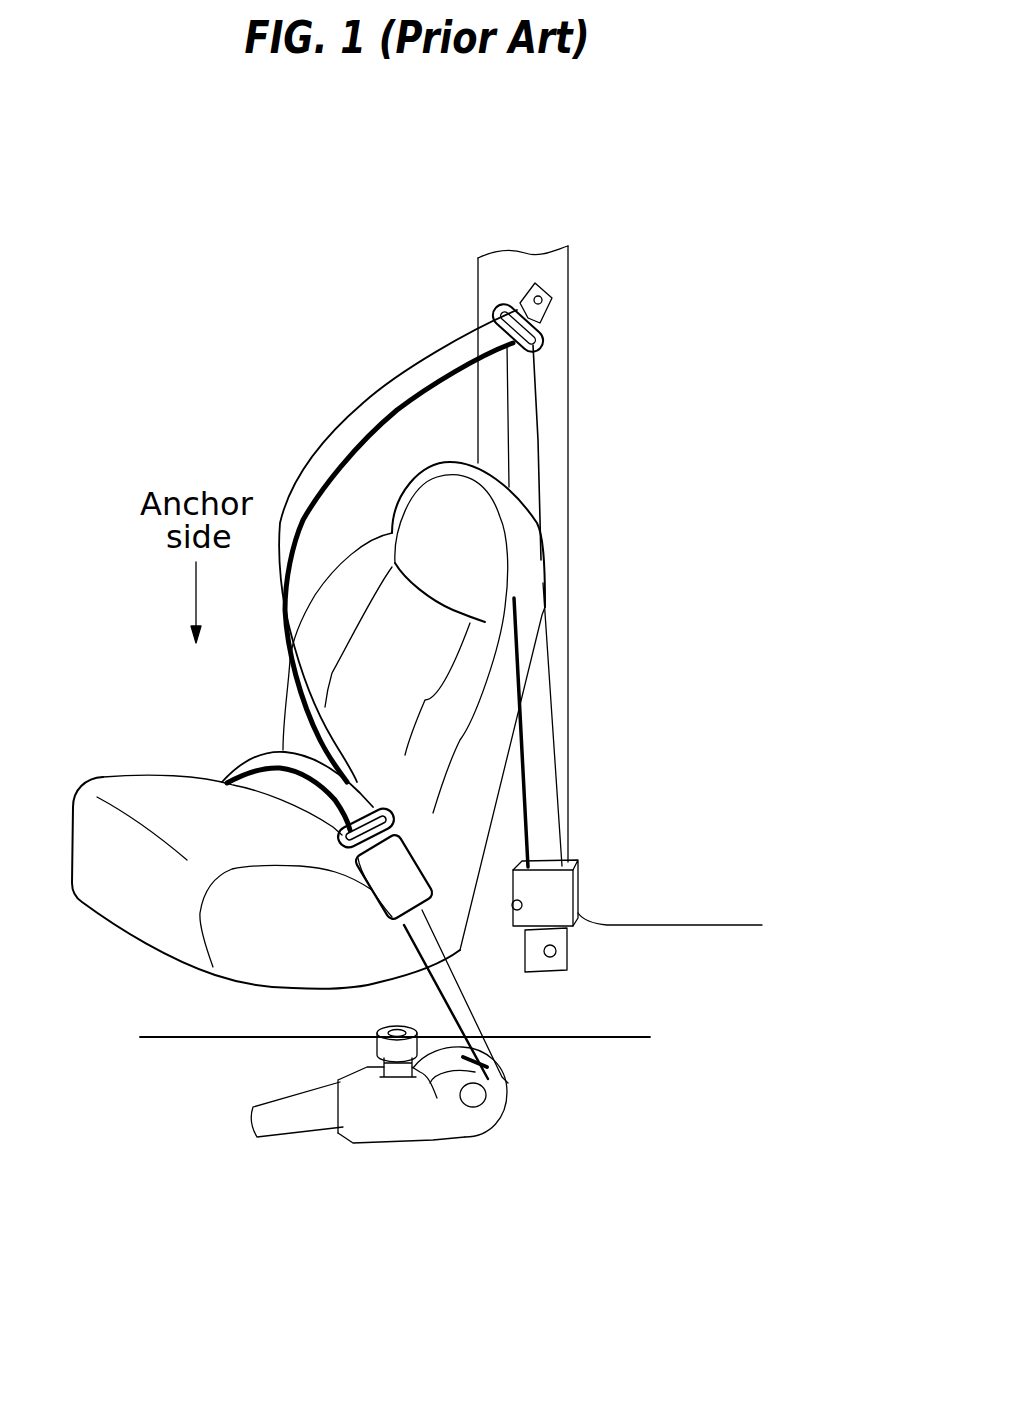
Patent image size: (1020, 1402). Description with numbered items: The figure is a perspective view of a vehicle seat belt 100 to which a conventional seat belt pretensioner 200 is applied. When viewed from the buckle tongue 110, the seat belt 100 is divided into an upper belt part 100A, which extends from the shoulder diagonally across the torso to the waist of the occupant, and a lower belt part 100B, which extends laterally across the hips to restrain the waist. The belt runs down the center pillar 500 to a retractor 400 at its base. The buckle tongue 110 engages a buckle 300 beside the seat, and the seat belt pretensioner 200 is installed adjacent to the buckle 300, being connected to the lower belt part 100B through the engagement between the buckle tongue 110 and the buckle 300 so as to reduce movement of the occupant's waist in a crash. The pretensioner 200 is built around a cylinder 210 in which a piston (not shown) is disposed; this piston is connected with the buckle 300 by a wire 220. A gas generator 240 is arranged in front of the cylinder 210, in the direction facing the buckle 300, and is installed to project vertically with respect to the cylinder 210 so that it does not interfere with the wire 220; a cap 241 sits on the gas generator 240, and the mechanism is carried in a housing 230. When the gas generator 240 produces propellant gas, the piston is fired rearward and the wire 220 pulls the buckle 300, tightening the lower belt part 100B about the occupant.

The seat belt 100 is at (270, 455).
The upper belt part 100A is at (385, 400).
The lower belt part 100B is at (262, 757).
The buckle tongue 110 is at (402, 790).
The seat belt pretensioner 200 is at (444, 1109).
The cylinder 210 is at (300, 1140).
The wire 220 is at (470, 1017).
The housing 230 is at (482, 1117).
The gas generator 240 is at (402, 1077).
The cap 241 is at (380, 1040).
The buckle 300 is at (405, 875).
The retractor 400 is at (565, 897).
The center pillar 500 is at (543, 420).